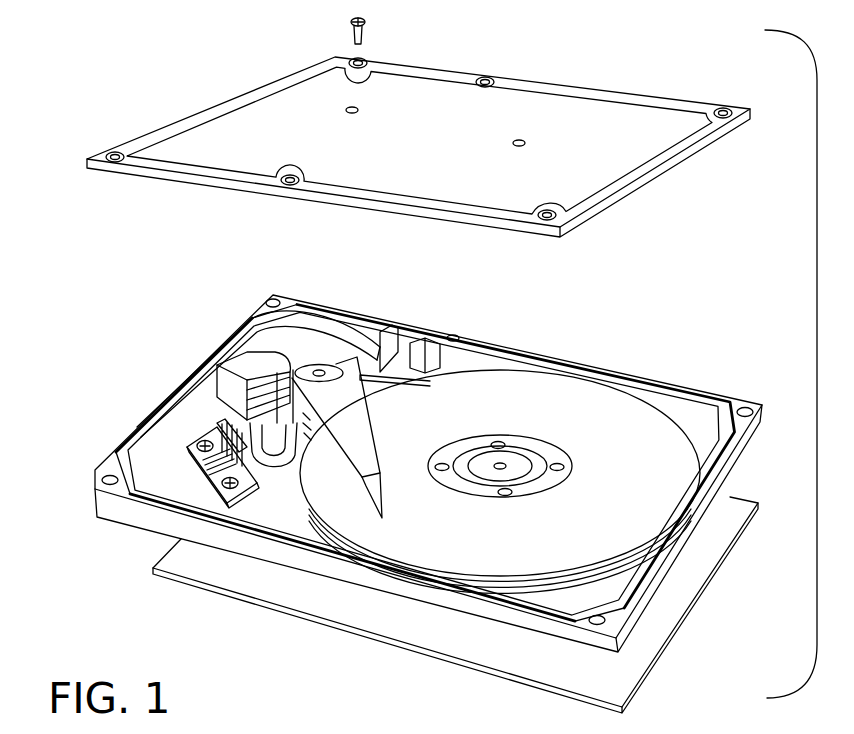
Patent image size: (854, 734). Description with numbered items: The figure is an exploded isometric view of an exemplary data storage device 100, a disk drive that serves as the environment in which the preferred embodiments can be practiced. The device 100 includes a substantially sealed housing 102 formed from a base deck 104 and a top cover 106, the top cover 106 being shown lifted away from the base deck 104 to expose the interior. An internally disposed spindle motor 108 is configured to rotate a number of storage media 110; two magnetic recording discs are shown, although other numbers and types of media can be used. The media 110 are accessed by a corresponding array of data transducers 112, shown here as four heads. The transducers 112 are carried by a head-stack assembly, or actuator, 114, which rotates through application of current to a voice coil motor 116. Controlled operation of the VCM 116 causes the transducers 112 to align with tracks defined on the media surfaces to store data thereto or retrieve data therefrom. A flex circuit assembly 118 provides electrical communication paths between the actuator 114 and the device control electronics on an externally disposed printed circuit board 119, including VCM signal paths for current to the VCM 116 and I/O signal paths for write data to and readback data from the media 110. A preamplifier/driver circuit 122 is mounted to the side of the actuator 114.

The data storage device 100 is at (143, 63).
The housing 102 is at (133, 296).
The base deck 104 is at (677, 557).
The top cover 106 is at (517, 100).
The spindle motor 108 is at (515, 462).
The storage media 110 is at (528, 588).
The data transducers 112 is at (388, 513).
The head-stack assembly 114 is at (357, 437).
The voice coil motor 116 is at (300, 335).
The flex circuit assembly 118 is at (267, 465).
The printed circuit board 119 is at (280, 612).
The preamplifier/driver circuit 122 is at (258, 350).